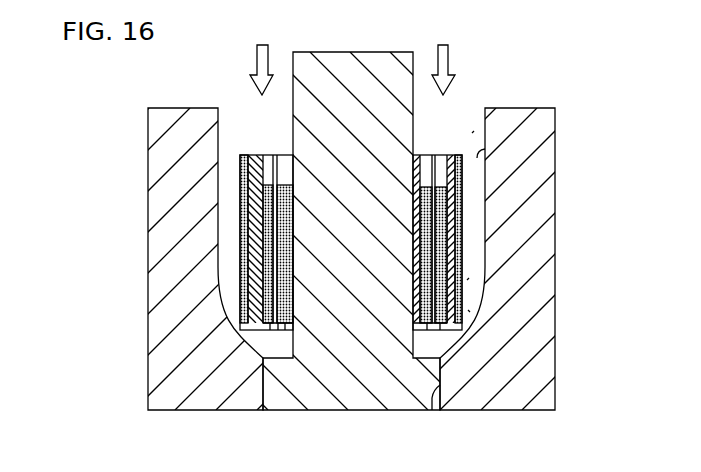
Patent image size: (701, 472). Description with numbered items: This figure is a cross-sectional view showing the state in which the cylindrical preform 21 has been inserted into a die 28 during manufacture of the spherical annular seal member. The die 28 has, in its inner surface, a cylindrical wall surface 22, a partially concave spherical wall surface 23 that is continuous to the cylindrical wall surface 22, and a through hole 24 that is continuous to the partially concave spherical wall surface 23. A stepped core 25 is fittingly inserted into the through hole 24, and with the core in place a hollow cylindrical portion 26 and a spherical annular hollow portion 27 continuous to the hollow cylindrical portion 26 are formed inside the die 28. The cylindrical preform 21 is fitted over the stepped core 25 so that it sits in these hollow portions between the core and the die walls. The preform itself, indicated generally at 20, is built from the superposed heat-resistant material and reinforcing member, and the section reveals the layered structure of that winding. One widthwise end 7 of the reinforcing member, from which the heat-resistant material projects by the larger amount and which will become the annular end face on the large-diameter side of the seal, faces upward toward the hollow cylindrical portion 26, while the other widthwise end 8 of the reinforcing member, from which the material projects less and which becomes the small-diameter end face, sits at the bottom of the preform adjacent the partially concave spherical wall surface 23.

The one widthwise end of the reinforcing member 7 is at (438, 187).
The other widthwise end of the reinforcing member 8 is at (268, 332).
The fiber preform 20 is at (256, 263).
The cylindrical preform 21 is at (237, 247).
The cylindrical wall surface 22 is at (477, 158).
The partially concave spherical wall surface 23 is at (468, 310).
The through hole 24 is at (430, 412).
The stepped core 25 is at (347, 357).
The hollow cylindrical portion 26 is at (472, 133).
The spherical annular hollow portion 27 is at (467, 280).
The die 28 is at (506, 106).